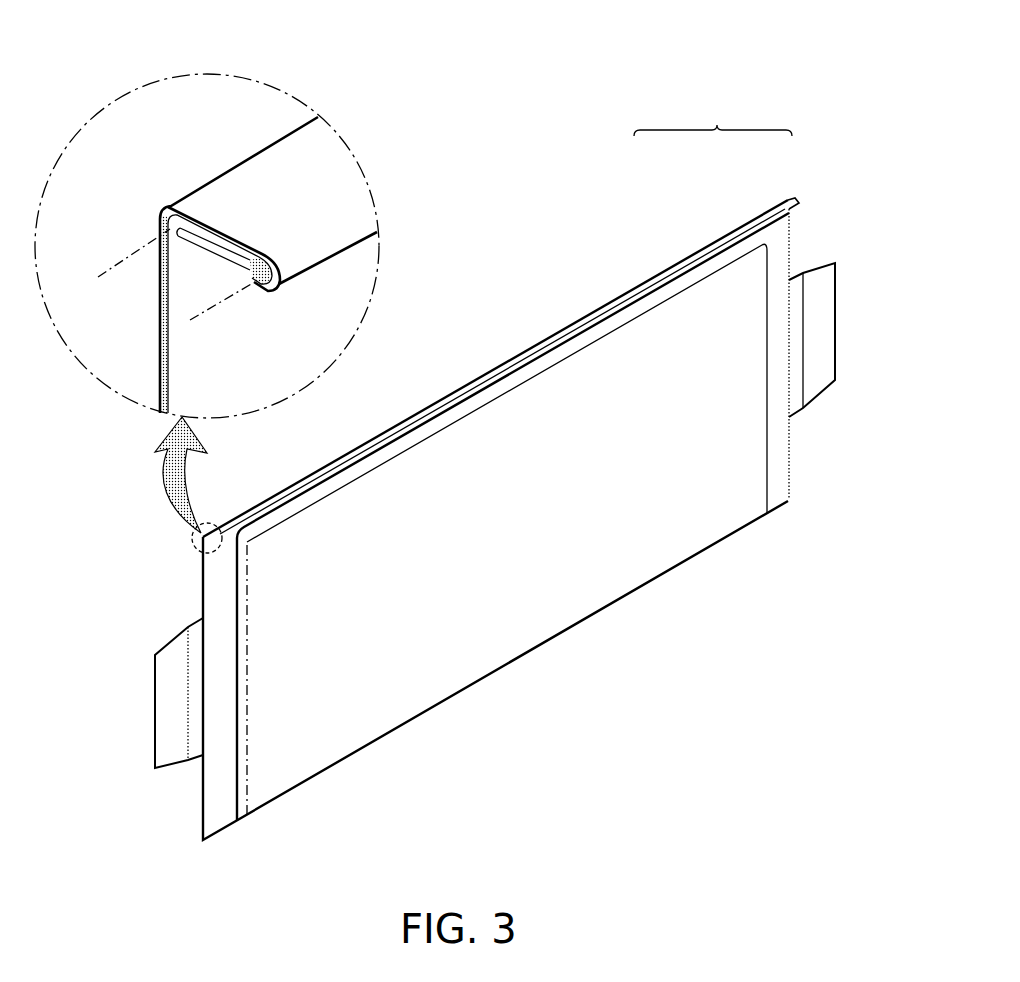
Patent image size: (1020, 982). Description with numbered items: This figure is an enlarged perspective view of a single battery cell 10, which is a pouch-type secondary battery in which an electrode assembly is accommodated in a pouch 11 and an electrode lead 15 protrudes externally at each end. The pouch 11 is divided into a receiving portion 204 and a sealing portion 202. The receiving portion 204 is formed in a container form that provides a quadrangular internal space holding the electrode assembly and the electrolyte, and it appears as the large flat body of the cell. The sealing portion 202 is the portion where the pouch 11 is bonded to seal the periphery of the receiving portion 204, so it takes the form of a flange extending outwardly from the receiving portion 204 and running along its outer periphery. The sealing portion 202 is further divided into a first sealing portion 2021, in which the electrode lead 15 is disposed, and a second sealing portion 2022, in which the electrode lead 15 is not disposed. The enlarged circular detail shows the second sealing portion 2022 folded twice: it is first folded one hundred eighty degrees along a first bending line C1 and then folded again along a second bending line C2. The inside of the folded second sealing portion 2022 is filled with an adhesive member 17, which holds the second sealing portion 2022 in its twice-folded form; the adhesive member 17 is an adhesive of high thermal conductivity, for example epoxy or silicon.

The battery cell 10 is at (462, 38).
The pouch 11 is at (537, 646).
The electrode lead 15 is at (817, 372).
The adhesive member 17 is at (257, 277).
The sealing portion 202 is at (713, 119).
The first sealing portion 2021 is at (777, 232).
The second sealing portion 2022 is at (252, 178).
The receiving portion 204 is at (482, 462).
The first bending line C1 is at (128, 260).
The second bending line C2 is at (215, 305).